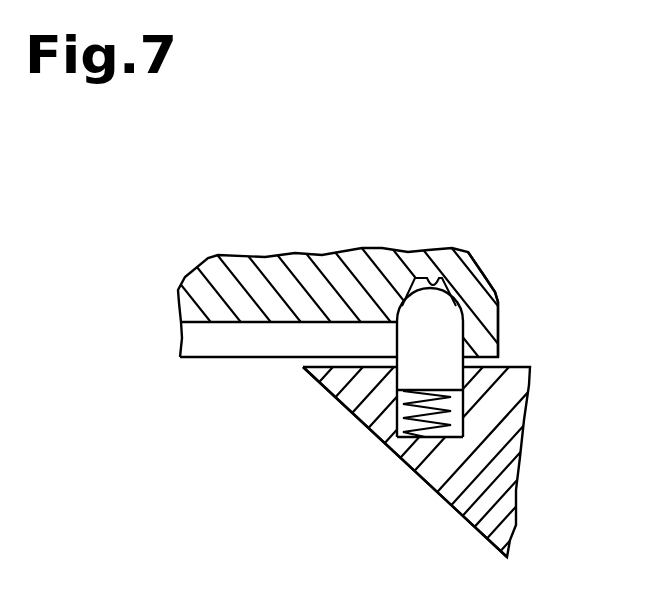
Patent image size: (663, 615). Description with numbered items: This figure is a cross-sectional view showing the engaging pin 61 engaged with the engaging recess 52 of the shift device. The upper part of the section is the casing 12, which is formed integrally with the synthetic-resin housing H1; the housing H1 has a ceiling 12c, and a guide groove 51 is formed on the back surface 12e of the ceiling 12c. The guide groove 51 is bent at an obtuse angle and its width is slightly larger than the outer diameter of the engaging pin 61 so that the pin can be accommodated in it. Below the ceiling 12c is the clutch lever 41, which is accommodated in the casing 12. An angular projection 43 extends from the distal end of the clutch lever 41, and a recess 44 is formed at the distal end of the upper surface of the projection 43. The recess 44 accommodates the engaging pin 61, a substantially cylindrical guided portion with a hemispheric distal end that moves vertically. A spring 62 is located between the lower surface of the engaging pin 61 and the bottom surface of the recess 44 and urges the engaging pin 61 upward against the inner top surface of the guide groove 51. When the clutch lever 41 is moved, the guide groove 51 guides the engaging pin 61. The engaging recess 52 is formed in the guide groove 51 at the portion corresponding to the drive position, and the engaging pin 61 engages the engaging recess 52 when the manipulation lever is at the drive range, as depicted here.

The casing 12 is at (358, 311).
The ceiling 12c is at (498, 306).
The back surface of the ceiling 12e is at (210, 357).
The housing H1 is at (262, 260).
The guide groove 51 is at (313, 329).
The engaging recess 52 is at (438, 280).
The engaging pin 61 is at (453, 340).
The spring 62 is at (413, 418).
The clutch lever 41 is at (407, 461).
The angular projection 43 is at (442, 480).
The recess 44 is at (405, 435).